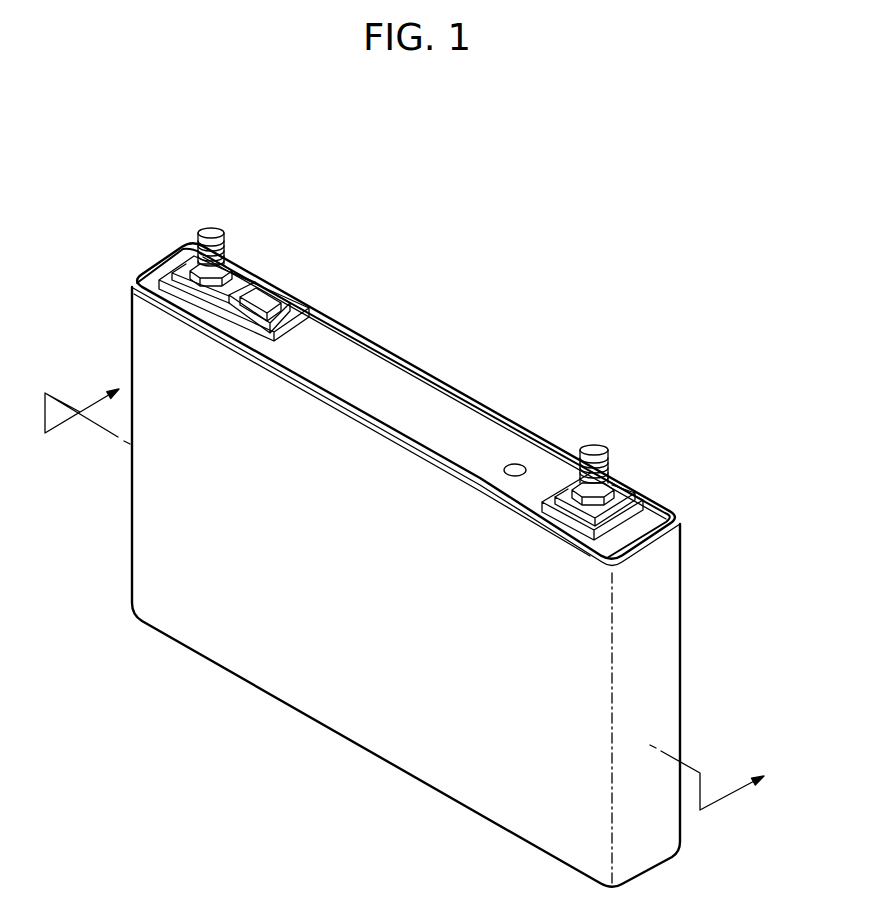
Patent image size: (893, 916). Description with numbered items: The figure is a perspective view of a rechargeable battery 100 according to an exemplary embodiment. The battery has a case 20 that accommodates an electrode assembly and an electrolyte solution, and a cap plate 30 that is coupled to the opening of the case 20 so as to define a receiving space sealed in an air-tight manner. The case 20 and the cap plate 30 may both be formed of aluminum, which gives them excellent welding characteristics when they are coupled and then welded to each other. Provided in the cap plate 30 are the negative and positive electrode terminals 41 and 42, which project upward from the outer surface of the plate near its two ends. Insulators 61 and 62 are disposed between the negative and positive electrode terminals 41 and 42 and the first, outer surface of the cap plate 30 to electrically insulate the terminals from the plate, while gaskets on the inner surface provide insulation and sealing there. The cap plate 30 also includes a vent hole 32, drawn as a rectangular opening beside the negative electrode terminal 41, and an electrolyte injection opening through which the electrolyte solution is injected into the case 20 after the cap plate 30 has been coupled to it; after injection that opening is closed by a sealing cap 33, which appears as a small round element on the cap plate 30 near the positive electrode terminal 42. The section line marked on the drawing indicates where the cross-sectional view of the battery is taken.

The rechargeable battery 100 is at (408, 541).
The case 20 is at (322, 704).
The cap plate 30 is at (346, 352).
The vent hole 32 is at (271, 303).
The sealing cap 33 is at (520, 466).
The negative electrode terminal 41 is at (274, 268).
The positive electrode terminal 42 is at (638, 493).
The insulator 61 is at (318, 316).
The insulator 62 is at (624, 520).